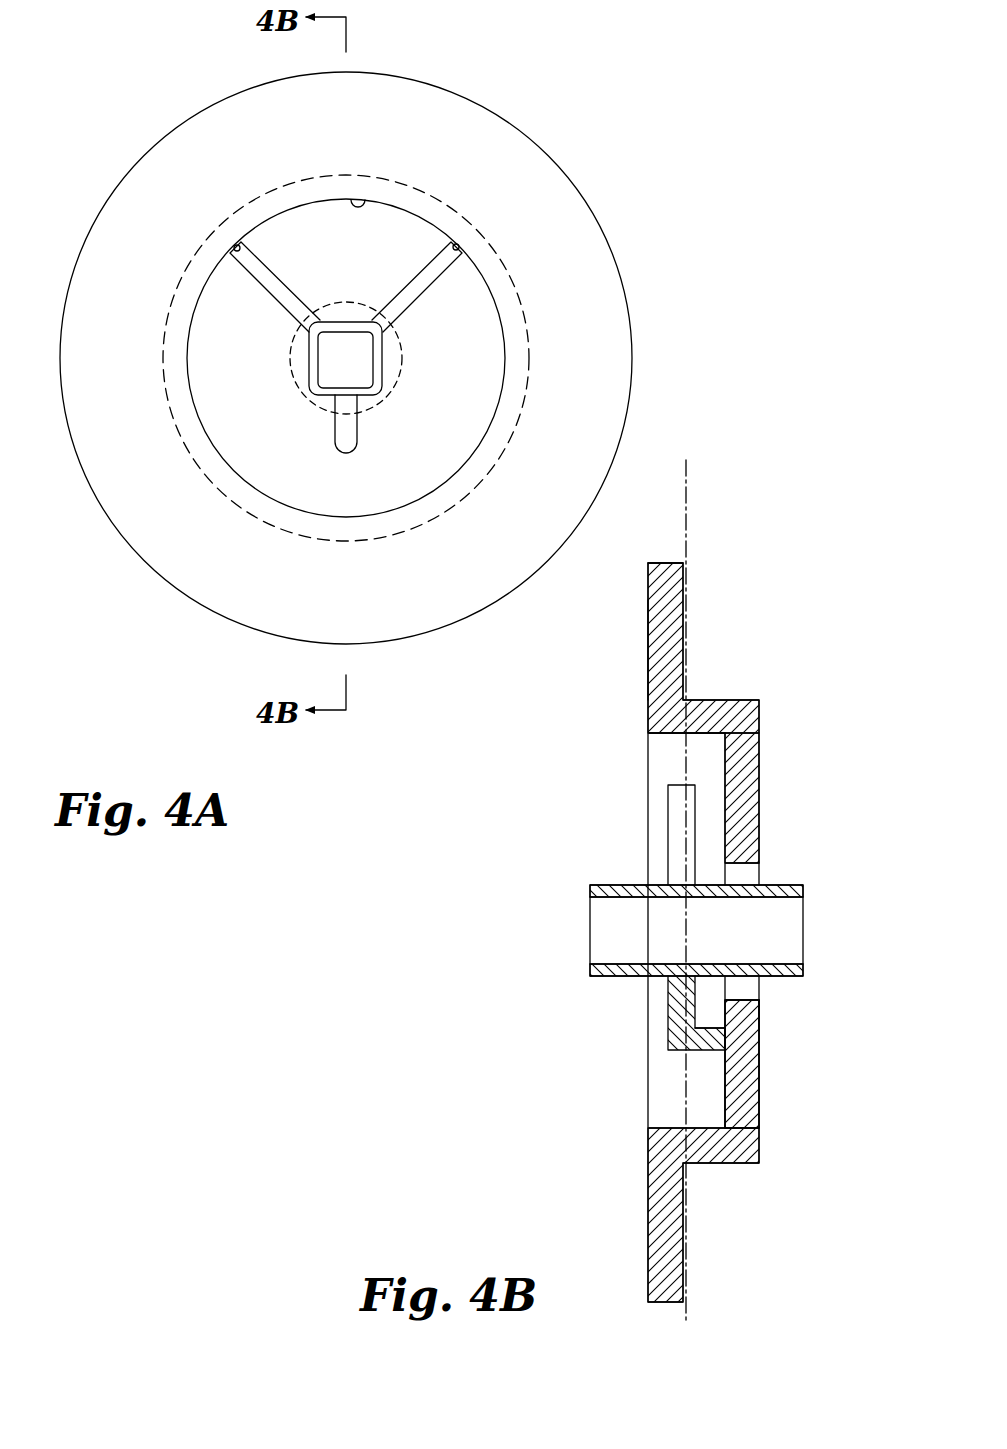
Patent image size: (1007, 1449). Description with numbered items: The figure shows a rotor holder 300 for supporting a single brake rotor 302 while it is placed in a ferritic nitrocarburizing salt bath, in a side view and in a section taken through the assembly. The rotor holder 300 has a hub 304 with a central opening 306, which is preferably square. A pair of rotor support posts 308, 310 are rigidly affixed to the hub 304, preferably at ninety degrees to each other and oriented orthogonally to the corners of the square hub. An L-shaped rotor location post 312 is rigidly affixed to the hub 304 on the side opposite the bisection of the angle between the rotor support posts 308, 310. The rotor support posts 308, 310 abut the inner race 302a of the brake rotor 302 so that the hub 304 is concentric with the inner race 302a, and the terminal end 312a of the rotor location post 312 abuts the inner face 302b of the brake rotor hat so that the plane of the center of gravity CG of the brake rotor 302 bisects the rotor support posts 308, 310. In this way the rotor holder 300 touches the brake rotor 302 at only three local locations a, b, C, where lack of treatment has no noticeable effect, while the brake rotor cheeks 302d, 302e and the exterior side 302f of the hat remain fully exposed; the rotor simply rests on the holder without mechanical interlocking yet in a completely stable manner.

In FIG. 4A, the rotor holder 300 is at (294, 394).
In FIG. 4B, the rotor holder 300 is at (612, 868).
In FIG. 4A, the brake rotor 302 is at (610, 220).
In FIG. 4B, the brake rotor 302 is at (724, 686).
In FIG. 4A, the inner race 302a is at (363, 201).
In FIG. 4B, the inner race 302a is at (703, 735).
In FIG. 4B, the inner face of the brake rotor hat 302b is at (724, 1087).
In FIG. 4B, the brake rotor cheek 302d is at (684, 605).
In FIG. 4B, the brake rotor cheek 302e is at (647, 668).
In FIG. 4B, the exterior side of the brake rotor hat 302f is at (760, 1013).
In FIG. 4A, the hub 304 is at (383, 358).
In FIG. 4B, the hub 304 is at (622, 978).
In FIG. 4A, the central opening 306 is at (363, 368).
In FIG. 4A, the rotor support post 308 is at (279, 277).
In FIG. 4B, the rotor support post 308 is at (696, 813).
In FIG. 4A, the rotor support post 310 is at (430, 288).
In FIG. 4A, the rotor location post 312 is at (333, 430).
In FIG. 4B, the rotor location post 312 is at (688, 1050).
In FIG. 4B, the terminal end 312a is at (726, 1031).
In FIG. 4A, the local location a is at (458, 246).
In FIG. 4A, the local location b is at (236, 247).
In FIG. 4B, the local location C is at (724, 1032).
In FIG. 4B, the center of gravity CG is at (689, 540).